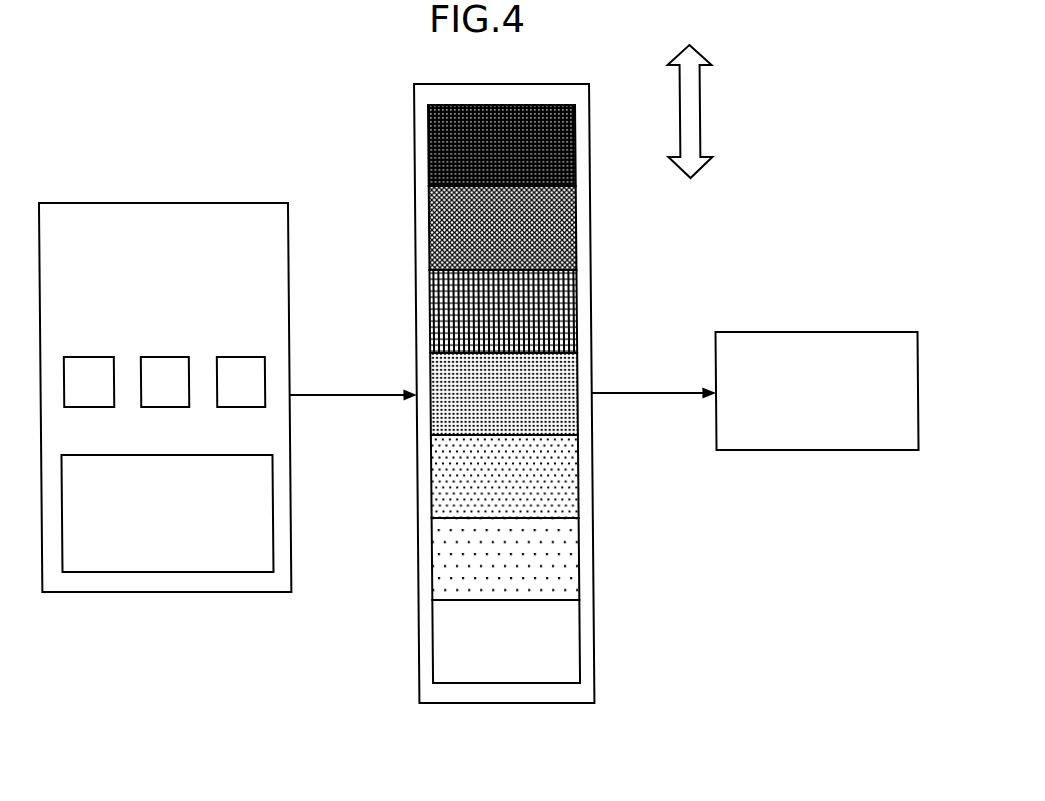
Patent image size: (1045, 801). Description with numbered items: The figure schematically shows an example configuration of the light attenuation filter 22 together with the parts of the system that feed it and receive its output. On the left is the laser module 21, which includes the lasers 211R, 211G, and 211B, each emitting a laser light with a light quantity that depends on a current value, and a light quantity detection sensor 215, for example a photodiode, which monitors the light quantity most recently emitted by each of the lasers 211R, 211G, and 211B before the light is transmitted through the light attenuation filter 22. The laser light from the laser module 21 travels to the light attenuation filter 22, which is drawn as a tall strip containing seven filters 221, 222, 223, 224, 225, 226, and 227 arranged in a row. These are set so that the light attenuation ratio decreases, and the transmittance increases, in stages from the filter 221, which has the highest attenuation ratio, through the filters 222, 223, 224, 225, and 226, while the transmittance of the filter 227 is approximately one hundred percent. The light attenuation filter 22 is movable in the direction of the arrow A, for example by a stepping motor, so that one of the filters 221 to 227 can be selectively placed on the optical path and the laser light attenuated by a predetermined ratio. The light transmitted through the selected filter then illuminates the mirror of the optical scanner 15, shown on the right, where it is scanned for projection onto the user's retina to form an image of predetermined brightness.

The optical scanner 15 is at (849, 332).
The laser module 21 is at (206, 203).
The laser 211R is at (85, 356).
The laser 211G is at (163, 356).
The laser 211B is at (240, 356).
The light quantity detection sensor 215 is at (178, 455).
The light attenuation filter 22 is at (522, 83).
The filter 221 is at (589, 143).
The filter 222 is at (588, 225).
The filter 223 is at (587, 300).
The filter 224 is at (587, 363).
The filter 225 is at (586, 474).
The filter 226 is at (585, 556).
The filter 227 is at (584, 636).
The arrow A is at (699, 108).